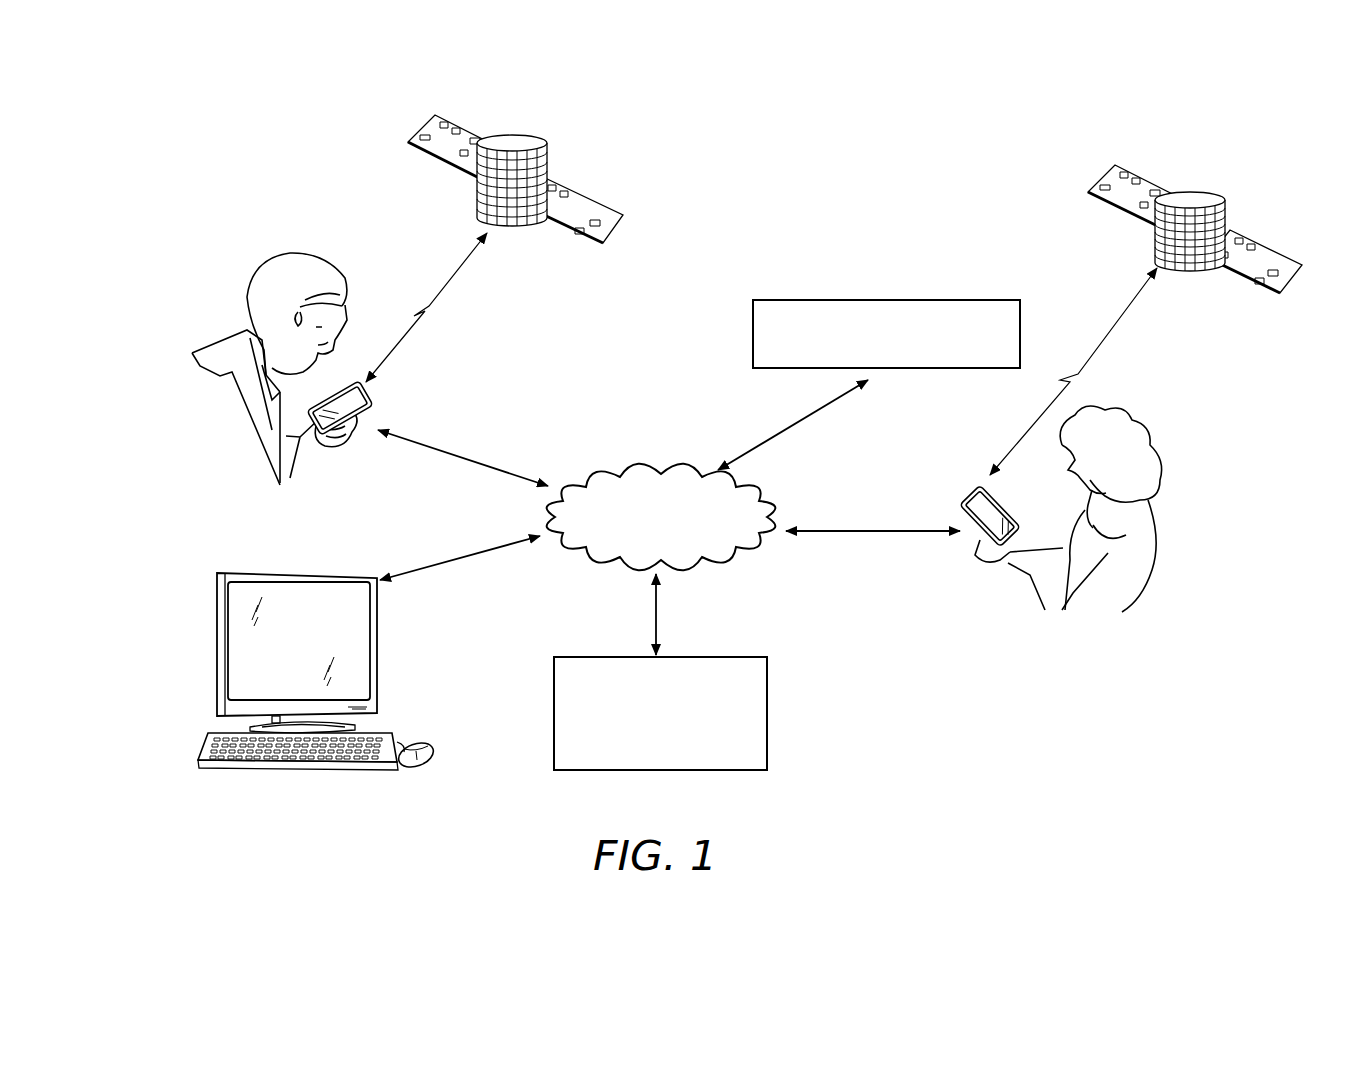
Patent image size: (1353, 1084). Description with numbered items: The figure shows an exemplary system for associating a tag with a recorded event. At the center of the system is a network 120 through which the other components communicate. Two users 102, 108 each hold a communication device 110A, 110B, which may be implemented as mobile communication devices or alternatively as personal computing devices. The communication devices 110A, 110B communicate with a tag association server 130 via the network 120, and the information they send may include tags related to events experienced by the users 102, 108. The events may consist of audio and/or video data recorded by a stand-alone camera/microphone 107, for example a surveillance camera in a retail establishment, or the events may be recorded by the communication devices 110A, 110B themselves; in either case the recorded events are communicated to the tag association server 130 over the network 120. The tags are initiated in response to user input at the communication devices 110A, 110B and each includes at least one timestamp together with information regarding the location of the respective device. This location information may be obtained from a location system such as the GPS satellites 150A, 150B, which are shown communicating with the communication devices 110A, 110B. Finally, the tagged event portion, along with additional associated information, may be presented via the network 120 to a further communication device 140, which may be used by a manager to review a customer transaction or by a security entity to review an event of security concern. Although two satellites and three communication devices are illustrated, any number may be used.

The user 102 is at (340, 356).
The camera/microphone 107 is at (897, 300).
The user 108 is at (1070, 509).
The communication device 110A is at (378, 405).
The communication device 110B is at (963, 497).
The network 120 is at (664, 460).
The tag association server 130 is at (768, 708).
The communication device 140 is at (217, 620).
The GPS satellite 150A is at (548, 147).
The GPS satellite 150B is at (1208, 193).